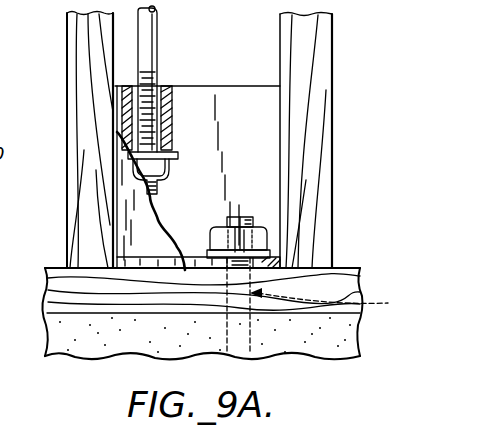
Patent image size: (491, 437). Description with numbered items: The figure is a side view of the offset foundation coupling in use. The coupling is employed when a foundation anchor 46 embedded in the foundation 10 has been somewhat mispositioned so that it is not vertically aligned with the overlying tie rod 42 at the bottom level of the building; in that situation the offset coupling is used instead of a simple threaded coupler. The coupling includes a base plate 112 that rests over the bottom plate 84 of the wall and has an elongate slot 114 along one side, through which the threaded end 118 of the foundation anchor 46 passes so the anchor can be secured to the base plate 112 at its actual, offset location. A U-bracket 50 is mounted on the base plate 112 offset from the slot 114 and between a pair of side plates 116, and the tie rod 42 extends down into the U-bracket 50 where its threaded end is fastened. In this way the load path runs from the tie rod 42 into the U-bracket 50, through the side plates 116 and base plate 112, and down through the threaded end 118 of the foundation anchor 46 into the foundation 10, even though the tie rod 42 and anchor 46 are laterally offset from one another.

The foundation 10 is at (352, 342).
The tie rod 42 is at (147, 32).
The foundation anchor 46 is at (320, 305).
The U-bracket 50 is at (175, 105).
The bottom plate 84 is at (353, 277).
The base plate 112 is at (272, 262).
The elongate slot 114 is at (267, 240).
The side plates 116 is at (268, 115).
The threaded end 118 is at (243, 215).